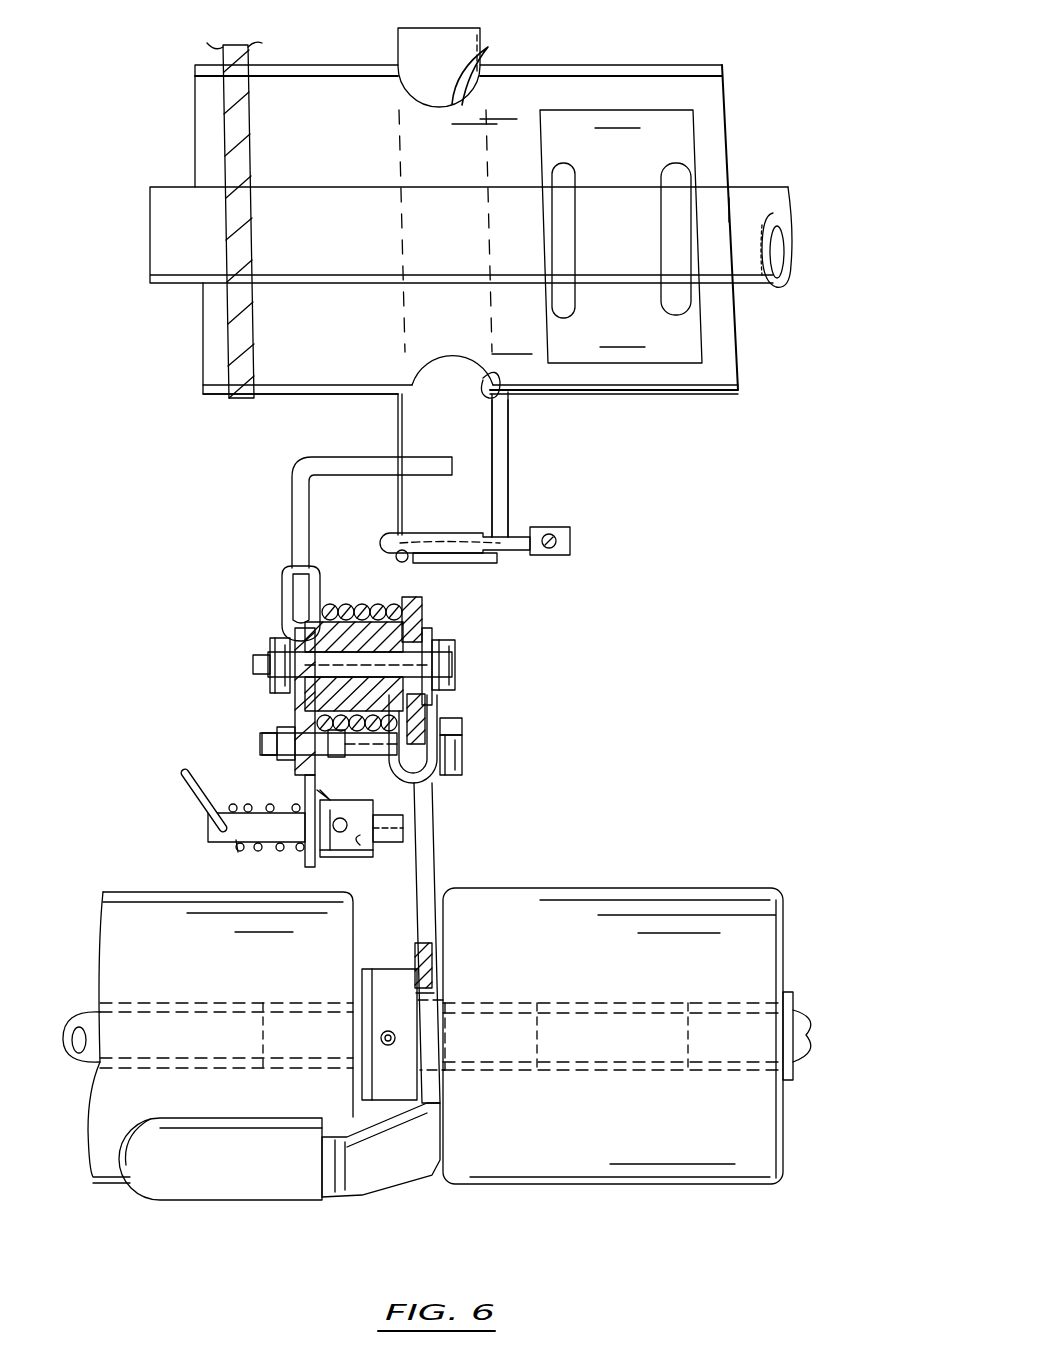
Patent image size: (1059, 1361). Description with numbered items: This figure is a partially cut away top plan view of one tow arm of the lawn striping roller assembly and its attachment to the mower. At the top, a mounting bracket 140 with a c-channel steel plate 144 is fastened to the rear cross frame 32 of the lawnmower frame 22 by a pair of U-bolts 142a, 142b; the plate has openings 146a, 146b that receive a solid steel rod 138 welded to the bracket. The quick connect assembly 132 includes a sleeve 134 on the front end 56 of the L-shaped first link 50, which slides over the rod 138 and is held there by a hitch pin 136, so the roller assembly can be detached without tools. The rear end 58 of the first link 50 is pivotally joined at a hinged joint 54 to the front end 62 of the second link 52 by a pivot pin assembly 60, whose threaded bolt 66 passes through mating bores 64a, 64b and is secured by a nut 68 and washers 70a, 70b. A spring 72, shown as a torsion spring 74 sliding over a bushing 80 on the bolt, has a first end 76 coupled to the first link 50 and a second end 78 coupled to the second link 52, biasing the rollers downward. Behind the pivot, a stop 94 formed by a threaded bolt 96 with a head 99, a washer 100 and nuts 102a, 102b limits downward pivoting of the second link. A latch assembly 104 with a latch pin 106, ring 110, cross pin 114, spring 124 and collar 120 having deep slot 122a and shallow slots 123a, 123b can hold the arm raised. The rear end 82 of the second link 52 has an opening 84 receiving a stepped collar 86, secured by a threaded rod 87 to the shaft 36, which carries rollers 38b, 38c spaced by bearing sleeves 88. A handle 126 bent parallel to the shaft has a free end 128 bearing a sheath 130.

The frame 22 is at (213, 109).
The rear cross frame 32 is at (758, 186).
The shaft 36 is at (83, 1012).
The roller 38b is at (122, 892).
The roller 38c is at (748, 870).
The first link 50 is at (282, 489).
The second link 52 is at (444, 872).
The hinged joint 54 is at (226, 630).
The front end 56 is at (360, 456).
The rear end 58 is at (305, 791).
The pivot pin assembly 60 is at (482, 661).
The front end 62 is at (426, 628).
The bore 64a is at (270, 681).
The bore 64b is at (436, 640).
The threaded bolt 66 is at (454, 650).
The nut 68 is at (290, 650).
The washer 70a is at (426, 706).
The washer 70b is at (300, 630).
The spring 72 is at (372, 578).
The torsion spring 74 is at (396, 606).
The first end 76 is at (282, 580).
The second end 78 is at (438, 775).
The bushing 80 is at (442, 681).
The rear end 82 is at (391, 956).
The opening 84 is at (432, 1004).
The stepped collar 86 is at (374, 983).
The threaded rod 87 is at (388, 1046).
The bearing sleeves 88 is at (425, 1096).
The stop 94 is at (476, 752).
The threaded bolt 96 is at (376, 793).
The head 99 is at (462, 731).
The washer 100 is at (300, 706).
The nut 102a is at (300, 727).
The nut 102b is at (262, 743).
The latch assembly 104 is at (176, 816).
The latch pin 106 is at (208, 837).
The ring 110 is at (182, 777).
The cross pin 114 is at (340, 816).
The collar 120 is at (343, 858).
The slot 122a is at (350, 862).
The slot 123a is at (386, 760).
The slot 123b is at (375, 861).
The spring 124 is at (232, 855).
The handle 126 is at (362, 1186).
The free end 128 is at (215, 1220).
The sheath 130 is at (155, 1181).
The quick connect assembly 132 is at (620, 521).
The sleeve 134 is at (510, 459).
The hitch pin 136 is at (556, 527).
The rod 138 is at (396, 41).
The mounting bracket 140 is at (692, 58).
The U-bolt 142a is at (560, 168).
The U-bolt 142b is at (678, 170).
The c-channel steel plate 144 is at (680, 392).
The opening 146a is at (488, 50).
The opening 146b is at (504, 410).